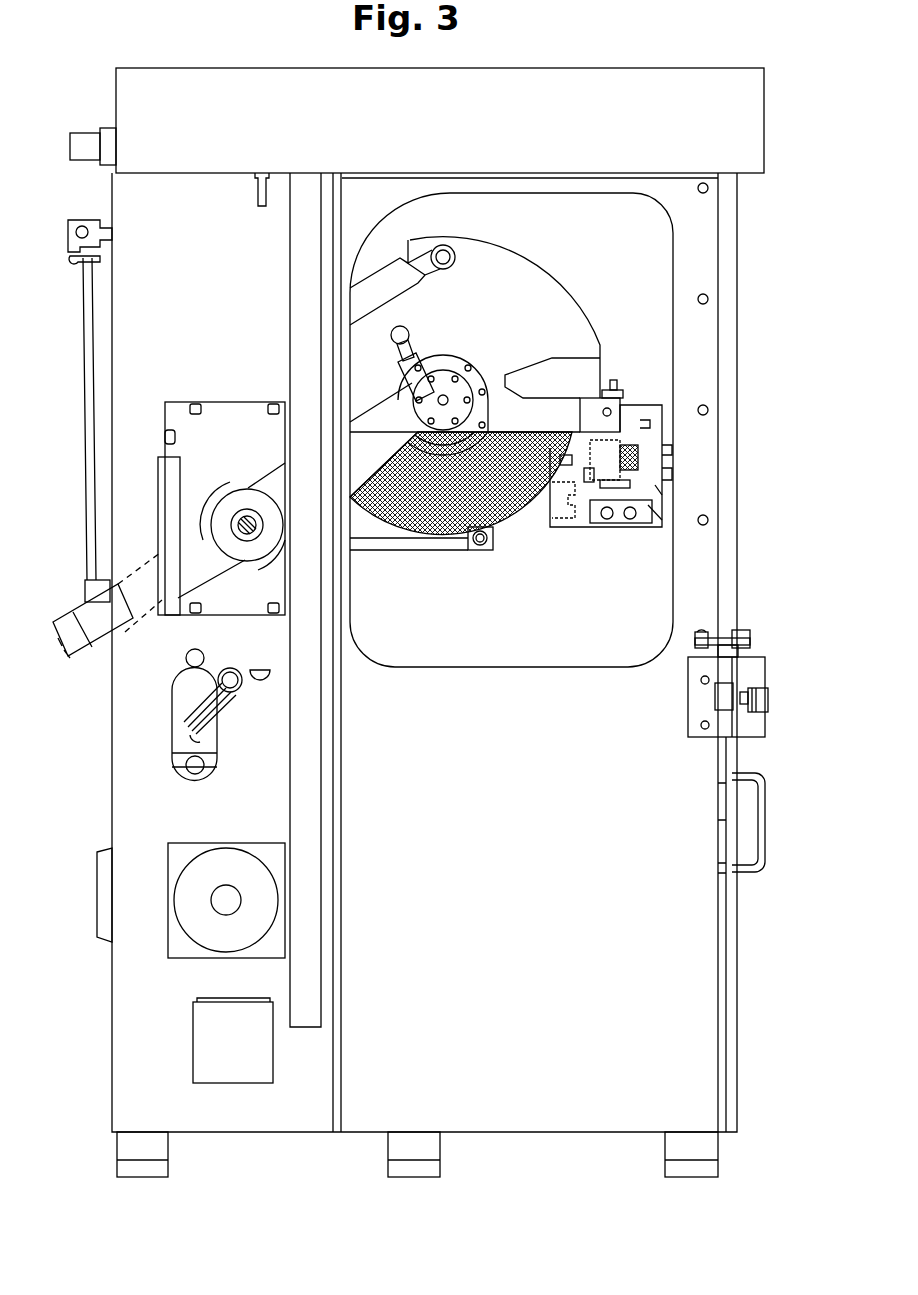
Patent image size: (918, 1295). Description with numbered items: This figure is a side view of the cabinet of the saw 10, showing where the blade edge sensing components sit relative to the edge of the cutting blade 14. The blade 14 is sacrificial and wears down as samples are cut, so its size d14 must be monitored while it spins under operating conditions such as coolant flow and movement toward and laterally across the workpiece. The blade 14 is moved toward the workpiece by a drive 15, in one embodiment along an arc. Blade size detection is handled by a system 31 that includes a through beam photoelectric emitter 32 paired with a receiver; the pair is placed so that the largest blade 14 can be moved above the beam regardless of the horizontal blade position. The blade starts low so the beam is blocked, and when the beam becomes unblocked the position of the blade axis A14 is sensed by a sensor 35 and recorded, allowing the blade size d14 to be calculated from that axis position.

The saw 10 is at (744, 456).
The cutting blade 14 is at (517, 513).
The drive 15 is at (244, 576).
The blade size detection system 31 is at (572, 467).
The through beam photoelectric emitter 32 is at (477, 550).
The position sensor 35 is at (247, 527).
The blade size d14 is at (443, 400).
The blade axis A14 is at (450, 398).